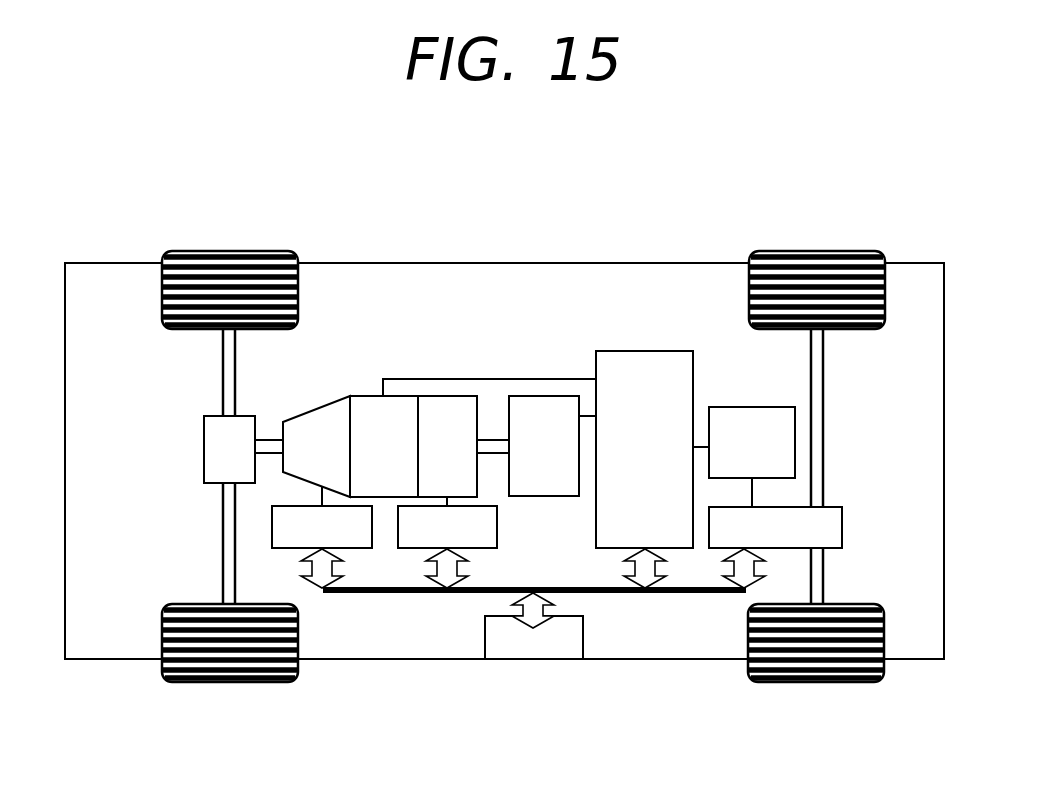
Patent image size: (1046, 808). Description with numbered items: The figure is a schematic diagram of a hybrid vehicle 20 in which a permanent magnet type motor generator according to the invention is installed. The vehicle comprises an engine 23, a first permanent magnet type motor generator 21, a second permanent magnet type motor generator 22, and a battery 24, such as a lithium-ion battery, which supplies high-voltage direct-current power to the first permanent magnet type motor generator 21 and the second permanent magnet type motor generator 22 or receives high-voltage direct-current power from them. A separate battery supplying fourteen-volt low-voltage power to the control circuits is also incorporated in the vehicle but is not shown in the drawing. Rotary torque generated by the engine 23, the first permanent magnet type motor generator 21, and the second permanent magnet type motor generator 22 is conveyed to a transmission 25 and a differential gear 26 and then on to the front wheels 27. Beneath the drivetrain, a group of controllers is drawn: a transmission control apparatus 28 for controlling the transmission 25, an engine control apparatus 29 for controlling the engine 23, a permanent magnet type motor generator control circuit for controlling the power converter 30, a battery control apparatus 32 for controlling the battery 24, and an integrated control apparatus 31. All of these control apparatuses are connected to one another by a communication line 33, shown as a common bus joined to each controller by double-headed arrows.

The hybrid vehicle 20 is at (460, 257).
The first permanent magnet type motor generator 21 is at (372, 396).
The second permanent magnet type motor generator 22 is at (548, 396).
The engine 23 is at (447, 396).
The battery 24 is at (745, 407).
The transmission 25 is at (328, 405).
The differential gear 26 is at (204, 452).
The front wheels 27 is at (245, 262).
The transmission control apparatus 28 is at (272, 528).
The engine control apparatus 29 is at (497, 528).
The power converter 30 is at (648, 352).
The integrated control apparatus 31 is at (541, 648).
The battery control apparatus 32 is at (835, 507).
The communication line 33 is at (603, 593).